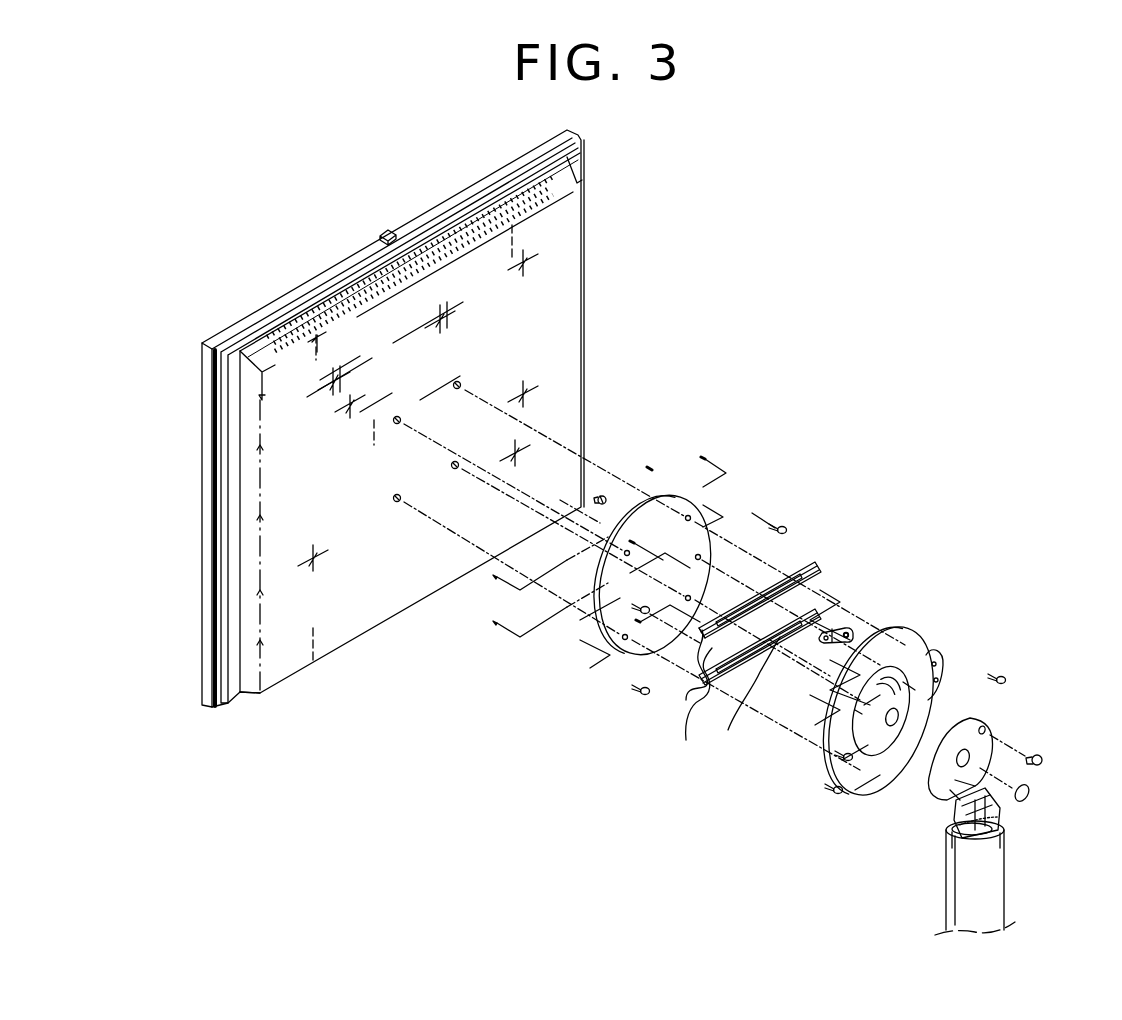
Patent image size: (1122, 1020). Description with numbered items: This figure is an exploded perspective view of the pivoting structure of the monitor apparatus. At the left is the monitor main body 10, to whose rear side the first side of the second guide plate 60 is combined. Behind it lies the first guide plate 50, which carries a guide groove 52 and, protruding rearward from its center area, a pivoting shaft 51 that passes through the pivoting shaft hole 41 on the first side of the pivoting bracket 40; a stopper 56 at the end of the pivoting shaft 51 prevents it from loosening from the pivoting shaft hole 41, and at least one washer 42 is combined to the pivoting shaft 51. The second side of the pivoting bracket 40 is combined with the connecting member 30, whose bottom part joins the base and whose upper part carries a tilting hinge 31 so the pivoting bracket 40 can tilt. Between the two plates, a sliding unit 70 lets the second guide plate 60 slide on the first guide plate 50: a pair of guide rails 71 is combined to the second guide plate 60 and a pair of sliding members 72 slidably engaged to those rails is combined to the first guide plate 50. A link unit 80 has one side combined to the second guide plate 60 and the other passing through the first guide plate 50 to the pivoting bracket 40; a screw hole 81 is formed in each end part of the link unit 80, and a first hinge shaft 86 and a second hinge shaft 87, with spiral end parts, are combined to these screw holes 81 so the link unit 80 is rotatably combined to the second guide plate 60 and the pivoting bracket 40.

The monitor main body 10 is at (592, 176).
The connecting member 30 is at (1010, 886).
The tilting hinge 31 is at (1002, 818).
The pivoting bracket 40 is at (995, 727).
The pivoting shaft hole 41 is at (957, 765).
The washer 42 is at (1032, 796).
The first guide plate 50 is at (930, 630).
The pivoting shaft 51 is at (893, 727).
The guide groove 52 is at (937, 648).
The stopper 56 is at (938, 702).
The second guide plate 60 is at (677, 492).
The sliding unit 70 is at (748, 773).
The guide rail 71 is at (686, 700).
The sliding member 72 is at (783, 625).
The link unit 80 is at (850, 630).
The screw hole 81 is at (841, 558).
The first hinge shaft 86 is at (1046, 758).
The second hinge shaft 87 is at (605, 496).